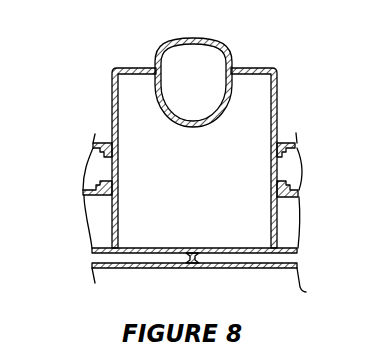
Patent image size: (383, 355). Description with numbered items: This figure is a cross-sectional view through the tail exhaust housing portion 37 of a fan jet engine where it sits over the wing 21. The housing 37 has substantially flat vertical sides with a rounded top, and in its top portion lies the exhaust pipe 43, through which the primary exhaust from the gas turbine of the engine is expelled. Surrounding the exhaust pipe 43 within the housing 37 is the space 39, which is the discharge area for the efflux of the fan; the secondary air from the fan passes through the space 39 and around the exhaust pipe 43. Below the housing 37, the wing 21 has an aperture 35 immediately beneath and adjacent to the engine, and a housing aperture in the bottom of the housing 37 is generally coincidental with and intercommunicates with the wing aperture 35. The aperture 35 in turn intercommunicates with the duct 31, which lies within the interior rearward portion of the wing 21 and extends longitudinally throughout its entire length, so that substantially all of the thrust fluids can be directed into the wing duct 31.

The wing 21 is at (132, 268).
The duct 31 is at (205, 232).
The aperture 35 is at (286, 189).
The tail exhaust housing portion 37 is at (250, 68).
The space 39 is at (190, 164).
The exhaust pipe 43 is at (205, 88).